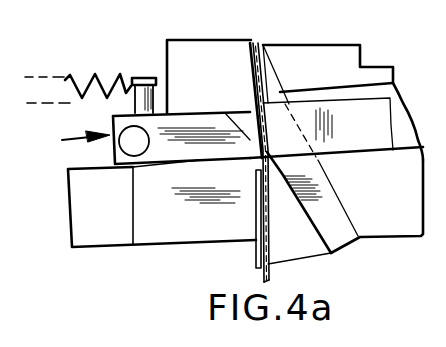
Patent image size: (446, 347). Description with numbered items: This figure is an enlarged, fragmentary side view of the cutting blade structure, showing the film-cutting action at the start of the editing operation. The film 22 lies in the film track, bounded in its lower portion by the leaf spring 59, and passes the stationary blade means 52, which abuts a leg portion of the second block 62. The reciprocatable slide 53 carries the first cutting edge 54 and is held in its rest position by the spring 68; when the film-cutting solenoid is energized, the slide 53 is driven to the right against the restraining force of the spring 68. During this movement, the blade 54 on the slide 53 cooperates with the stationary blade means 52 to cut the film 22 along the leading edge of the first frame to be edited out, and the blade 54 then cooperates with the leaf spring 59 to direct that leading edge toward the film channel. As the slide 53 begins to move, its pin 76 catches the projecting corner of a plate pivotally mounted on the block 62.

The spring 68 is at (78, 76).
The leaf spring 59 is at (246, 70).
The film 22 is at (256, 49).
The first cutting edge 54 is at (266, 140).
The pin 76 is at (127, 143).
The reciprocatable slide 53 is at (168, 150).
The second block 62 is at (93, 228).
The stationary blade means 52 is at (303, 236).